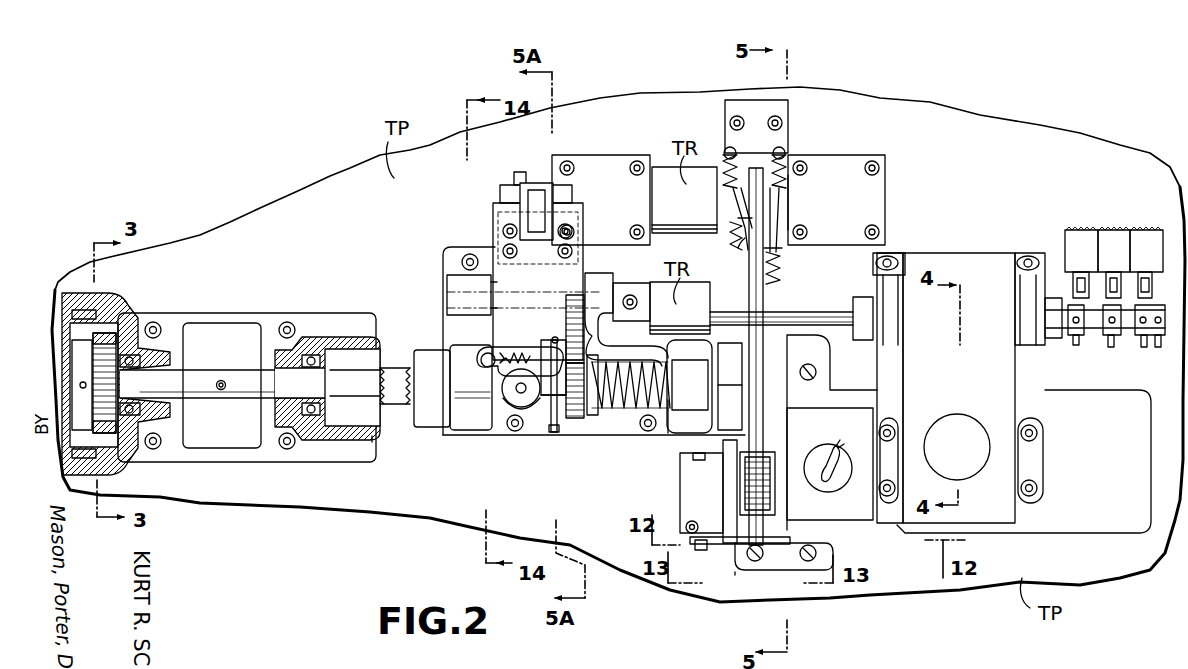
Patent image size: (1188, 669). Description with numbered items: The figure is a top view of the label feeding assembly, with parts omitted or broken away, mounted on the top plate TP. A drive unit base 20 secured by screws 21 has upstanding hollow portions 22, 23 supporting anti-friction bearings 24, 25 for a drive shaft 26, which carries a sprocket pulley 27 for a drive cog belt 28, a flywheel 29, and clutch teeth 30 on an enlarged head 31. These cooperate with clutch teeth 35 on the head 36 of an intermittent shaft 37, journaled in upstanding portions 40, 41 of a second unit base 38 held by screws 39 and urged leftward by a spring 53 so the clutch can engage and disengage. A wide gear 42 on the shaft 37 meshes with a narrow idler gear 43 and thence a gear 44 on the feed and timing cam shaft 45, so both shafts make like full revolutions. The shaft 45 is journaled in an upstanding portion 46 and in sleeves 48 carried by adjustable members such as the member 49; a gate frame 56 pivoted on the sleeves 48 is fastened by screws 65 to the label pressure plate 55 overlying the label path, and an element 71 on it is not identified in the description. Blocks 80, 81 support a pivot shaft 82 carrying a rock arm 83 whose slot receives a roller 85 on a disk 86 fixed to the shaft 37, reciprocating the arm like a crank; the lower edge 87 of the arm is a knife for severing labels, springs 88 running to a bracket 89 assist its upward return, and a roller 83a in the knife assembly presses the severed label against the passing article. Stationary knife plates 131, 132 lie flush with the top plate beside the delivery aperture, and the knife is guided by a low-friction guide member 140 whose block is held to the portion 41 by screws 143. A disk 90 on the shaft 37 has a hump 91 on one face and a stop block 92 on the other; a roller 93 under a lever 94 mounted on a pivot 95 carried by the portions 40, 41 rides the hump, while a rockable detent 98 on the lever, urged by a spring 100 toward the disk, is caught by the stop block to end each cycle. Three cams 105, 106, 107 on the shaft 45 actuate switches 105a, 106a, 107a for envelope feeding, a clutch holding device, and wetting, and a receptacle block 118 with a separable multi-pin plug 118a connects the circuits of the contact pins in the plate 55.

The drive unit base 20 is at (210, 313).
The screws 21 is at (153, 322).
The upstanding hollow portion 22 is at (108, 300).
The upstanding hollow portion 23 is at (344, 337).
The anti-friction bearing 24 is at (135, 406).
The anti-friction bearing 25 is at (312, 415).
The drive shaft 26 is at (275, 380).
The sprocket pulley 27 is at (100, 372).
The drive cog belt 28 is at (96, 342).
The flywheel 29 is at (238, 448).
The clutch teeth 30 is at (372, 375).
The enlarged head 31 is at (380, 430).
The clutch teeth 35 is at (396, 406).
The head 36 is at (410, 350).
The shaft 37 is at (620, 400).
The second unit base 38 is at (500, 436).
The screws 39 is at (464, 258).
The upstanding portion 40 is at (462, 432).
The upstanding portion 41 is at (680, 440).
The wide gear 42 is at (560, 412).
The narrow idler gear 43 is at (556, 300).
The gear 44 is at (572, 300).
The feed and timing cam shaft 45 is at (812, 318).
The upstanding portion 46 is at (600, 288).
The sleeves 48 is at (866, 298).
The member 49 is at (889, 256).
The spring 53 is at (612, 412).
The label pressure plate 55 is at (1105, 520).
The gate frame 56 is at (956, 266).
The screws 65 is at (890, 432).
The opening 71 is at (958, 436).
The block 80 is at (604, 162).
The block 81 is at (858, 162).
The pivot shaft 82 is at (780, 195).
The rock arm 83 is at (768, 310).
The roller 83a is at (766, 504).
The roller 85 is at (768, 392).
The disk 86 is at (730, 386).
The knife 87 is at (778, 542).
The springs 88 is at (736, 240).
The bracket 89 is at (788, 140).
The disk 90 is at (530, 410).
The hump 91 is at (515, 431).
The stop block 92 is at (556, 432).
The roller 93 is at (492, 396).
The lever 94 is at (504, 324).
The pivot 95 is at (448, 300).
The rockable detent 98 is at (575, 420).
The spring 100 is at (508, 356).
The cam 105 is at (1076, 336).
The cam 106 is at (1112, 347).
The cam 107 is at (1158, 347).
The switch 105a is at (1072, 232).
The switch 106a is at (1113, 242).
The switch 107a is at (1140, 250).
The receptacle block 118 is at (858, 522).
The separable multi-pin plug 118a is at (822, 452).
The stationary knife plate 131 is at (735, 566).
The stationary knife plate 132 is at (826, 378).
The guide member 140 is at (722, 484).
The screws 143 is at (680, 462).